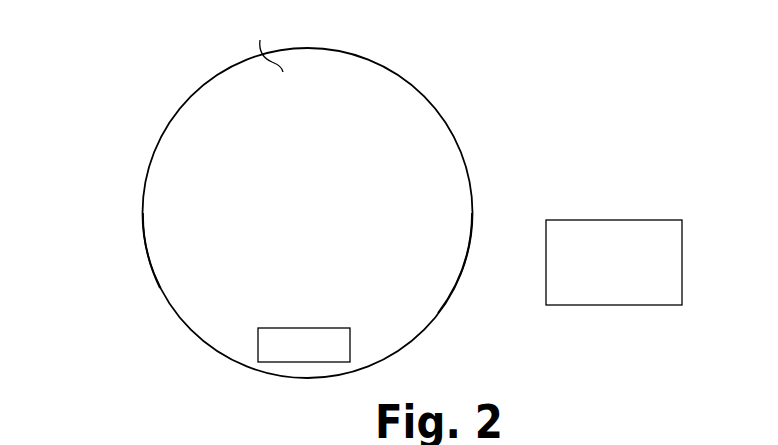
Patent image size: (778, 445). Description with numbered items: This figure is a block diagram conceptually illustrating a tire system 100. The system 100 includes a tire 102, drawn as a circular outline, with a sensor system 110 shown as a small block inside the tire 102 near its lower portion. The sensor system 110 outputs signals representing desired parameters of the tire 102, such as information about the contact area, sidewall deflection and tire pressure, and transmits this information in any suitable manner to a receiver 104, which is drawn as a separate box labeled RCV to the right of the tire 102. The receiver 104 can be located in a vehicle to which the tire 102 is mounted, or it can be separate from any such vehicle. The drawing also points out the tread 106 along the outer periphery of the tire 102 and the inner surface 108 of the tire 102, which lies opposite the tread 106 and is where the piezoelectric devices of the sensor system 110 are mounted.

The tire system 100 is at (147, 103).
The tire 102 is at (261, 43).
The receiver 104 is at (640, 219).
The tread 106 is at (157, 288).
The inner surface 108 is at (437, 313).
The sensor system 110 is at (283, 315).